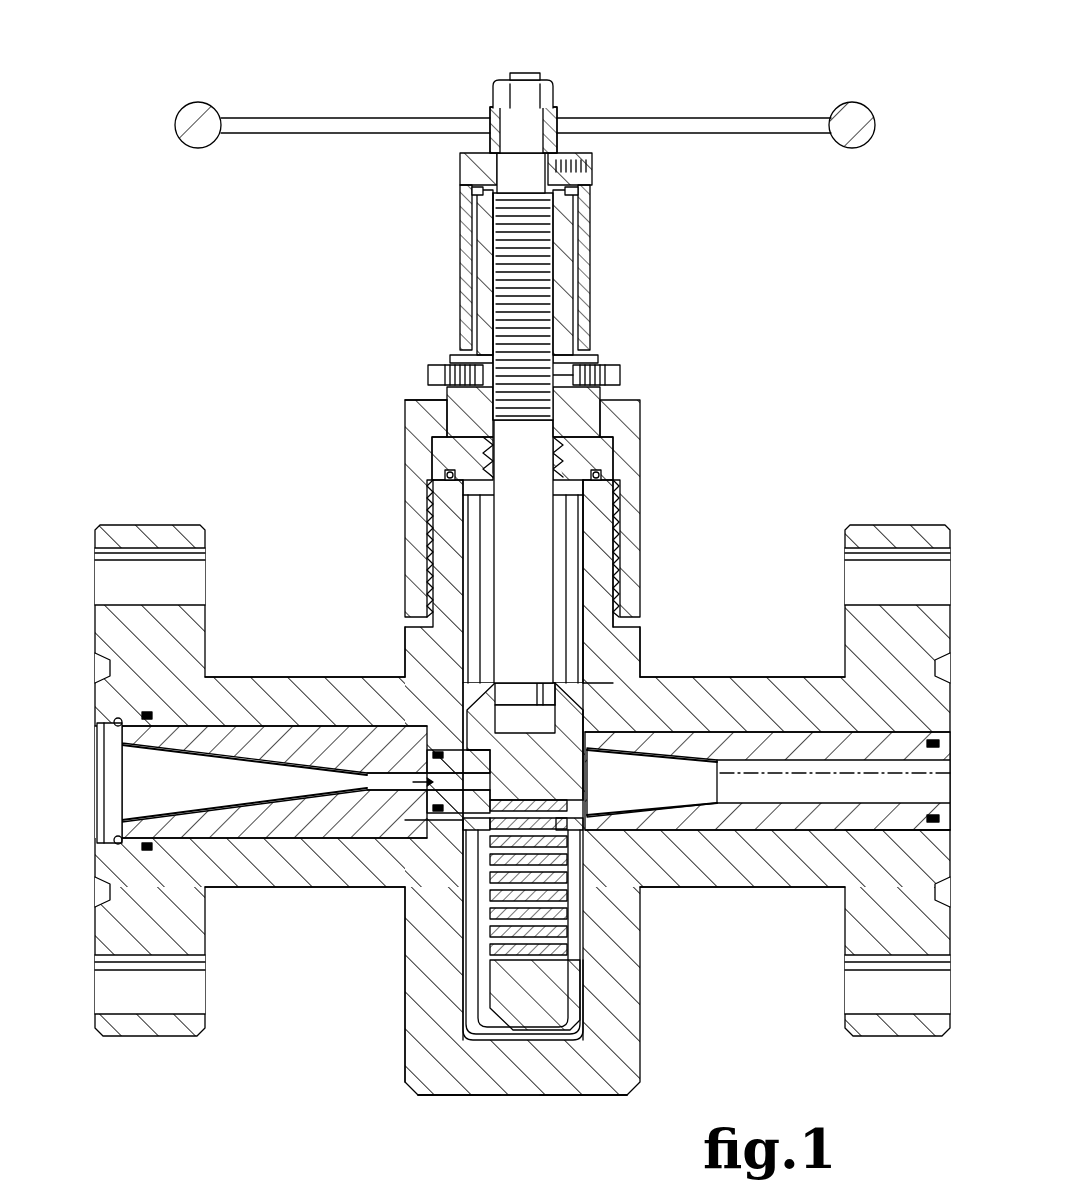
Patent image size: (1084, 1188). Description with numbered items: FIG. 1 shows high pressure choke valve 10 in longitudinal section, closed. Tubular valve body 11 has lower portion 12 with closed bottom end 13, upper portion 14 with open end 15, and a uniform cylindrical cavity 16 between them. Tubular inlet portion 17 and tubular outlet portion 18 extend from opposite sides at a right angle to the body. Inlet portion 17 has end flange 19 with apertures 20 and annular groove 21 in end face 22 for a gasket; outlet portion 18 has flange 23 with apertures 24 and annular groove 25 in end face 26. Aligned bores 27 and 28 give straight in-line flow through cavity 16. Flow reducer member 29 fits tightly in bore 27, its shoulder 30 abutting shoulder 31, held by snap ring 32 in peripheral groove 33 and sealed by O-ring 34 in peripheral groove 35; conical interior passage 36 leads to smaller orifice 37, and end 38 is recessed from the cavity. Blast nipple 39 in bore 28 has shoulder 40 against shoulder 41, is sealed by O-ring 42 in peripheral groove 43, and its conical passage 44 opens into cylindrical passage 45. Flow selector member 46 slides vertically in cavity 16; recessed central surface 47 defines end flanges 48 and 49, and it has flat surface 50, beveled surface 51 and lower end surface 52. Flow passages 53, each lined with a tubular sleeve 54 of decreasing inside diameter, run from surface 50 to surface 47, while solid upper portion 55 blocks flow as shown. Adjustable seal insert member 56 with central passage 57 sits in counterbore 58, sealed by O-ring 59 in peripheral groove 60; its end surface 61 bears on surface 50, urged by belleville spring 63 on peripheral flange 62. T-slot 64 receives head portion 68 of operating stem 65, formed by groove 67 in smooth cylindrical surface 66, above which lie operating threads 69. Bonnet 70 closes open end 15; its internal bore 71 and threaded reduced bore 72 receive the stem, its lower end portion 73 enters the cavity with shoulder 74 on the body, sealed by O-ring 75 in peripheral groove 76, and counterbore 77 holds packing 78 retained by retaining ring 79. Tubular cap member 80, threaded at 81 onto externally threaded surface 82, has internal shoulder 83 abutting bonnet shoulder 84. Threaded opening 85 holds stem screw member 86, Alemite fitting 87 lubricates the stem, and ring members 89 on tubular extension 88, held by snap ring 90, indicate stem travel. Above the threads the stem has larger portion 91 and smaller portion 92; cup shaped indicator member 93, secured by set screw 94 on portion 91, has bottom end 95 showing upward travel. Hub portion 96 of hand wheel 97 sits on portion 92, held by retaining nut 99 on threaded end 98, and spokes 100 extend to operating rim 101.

The high pressure choke valve 10 is at (322, 622).
The tubular valve body 11 is at (400, 655).
The lower portion 12 is at (405, 1010).
The closed bottom end 13 is at (520, 1095).
The upper portion 14 is at (650, 650).
The open end 15 is at (625, 510).
The interior cylindrical cavity 16 is at (460, 960).
The tubular inlet portion 17 is at (250, 890).
The tubular outlet portion 18 is at (720, 890).
The end flange 19 is at (140, 1040).
The holes or apertures 20 is at (195, 585).
The annular groove 21 is at (97, 900).
The end face 22 is at (97, 620).
The flange 23 is at (900, 1040).
The holes or apertures 24 is at (850, 548).
The annular groove 25 is at (950, 665).
The end face 26 is at (950, 1010).
The internal bore 27 is at (290, 870).
The internal bore 28 is at (790, 860).
The flow reducer member 29 is at (290, 710).
The shoulder 30 is at (175, 700).
The shoulder 31 is at (150, 830).
The snap ring 32 is at (115, 735).
The peripheral groove 33 is at (115, 825).
The O-ring 34 is at (145, 850).
The peripheral groove 35 is at (165, 845).
The conical interior passage 36 is at (175, 760).
The orifice 37 is at (365, 775).
The end of flow reducer 38 is at (395, 870).
The blast nipple 39 is at (820, 710).
The shoulder 40 is at (900, 845).
The shoulder 41 is at (880, 735).
The O-ring 42 is at (935, 838).
The peripheral groove 43 is at (925, 748).
The conical passage 44 is at (700, 790).
The cylindrical passage 45 is at (780, 750).
The flow selector member 46 is at (450, 670).
The central body surface portion 47 is at (590, 760).
The end flange 48 is at (590, 700).
The end flange 49 is at (585, 1000).
The flat surface 50 is at (470, 1040).
The beveled surface 51 is at (480, 1060).
The lower end surface 52 is at (560, 1060).
The flow passages 53 is at (560, 960).
The tubular sleeves 54 is at (567, 920).
The upper portion 55 is at (585, 780).
The adjustable seal insert member 56 is at (425, 790).
The central passage 57 is at (495, 770).
The counterbore 58 is at (445, 735).
The O-ring 59 is at (430, 745).
The peripheral groove 60 is at (430, 810).
The end surface 61 is at (495, 755).
The peripheral flange 62 is at (470, 860).
The belleville spring 63 is at (470, 825).
The T-slot 64 is at (555, 718).
The operating stem 65 is at (430, 550).
The smooth cylindrical outer surface 66 is at (541, 600).
The groove 67 is at (556, 683).
The head portion 68 is at (525, 690).
The operating threads 69 is at (488, 275).
The supporting bonnet 70 is at (465, 395).
The internal bore 71 is at (553, 315).
The bore of reduced diameter 72 is at (485, 230).
The lower end portion 73 is at (572, 515).
The shoulder 74 is at (448, 475).
The O-ring 75 is at (488, 465).
The peripheral groove 76 is at (597, 475).
The counterbore 77 is at (625, 420).
The packing 78 is at (460, 455).
The retaining ring 79 is at (541, 510).
The tubular cap member 80 is at (420, 510).
The internal threads 81 is at (616, 545).
The externally threaded surface 82 is at (617, 590).
The internal flange or shoulder 83 is at (580, 455).
The shoulder 84 is at (425, 420).
The internally threaded opening 85 is at (455, 356).
The stem screw member 86 is at (428, 375).
The Alemite fitting 87 is at (618, 375).
The tubular extension 88 is at (565, 240).
The ring members 89 is at (582, 280).
The snap ring 90 is at (575, 190).
The larger diameter cylindrical portion 91 is at (470, 165).
The smaller diameter cylindrical portion 92 is at (543, 135).
The cup shaped indicator member 93 is at (478, 190).
The set screw 94 is at (590, 165).
The bottom end 95 is at (580, 358).
The hub portion 96 is at (492, 115).
The hand wheel 97 is at (330, 112).
The threaded upper end 98 is at (527, 72).
The retaining nut 99 is at (553, 92).
The spokes 100 is at (715, 118).
The operating rim 101 is at (200, 148).